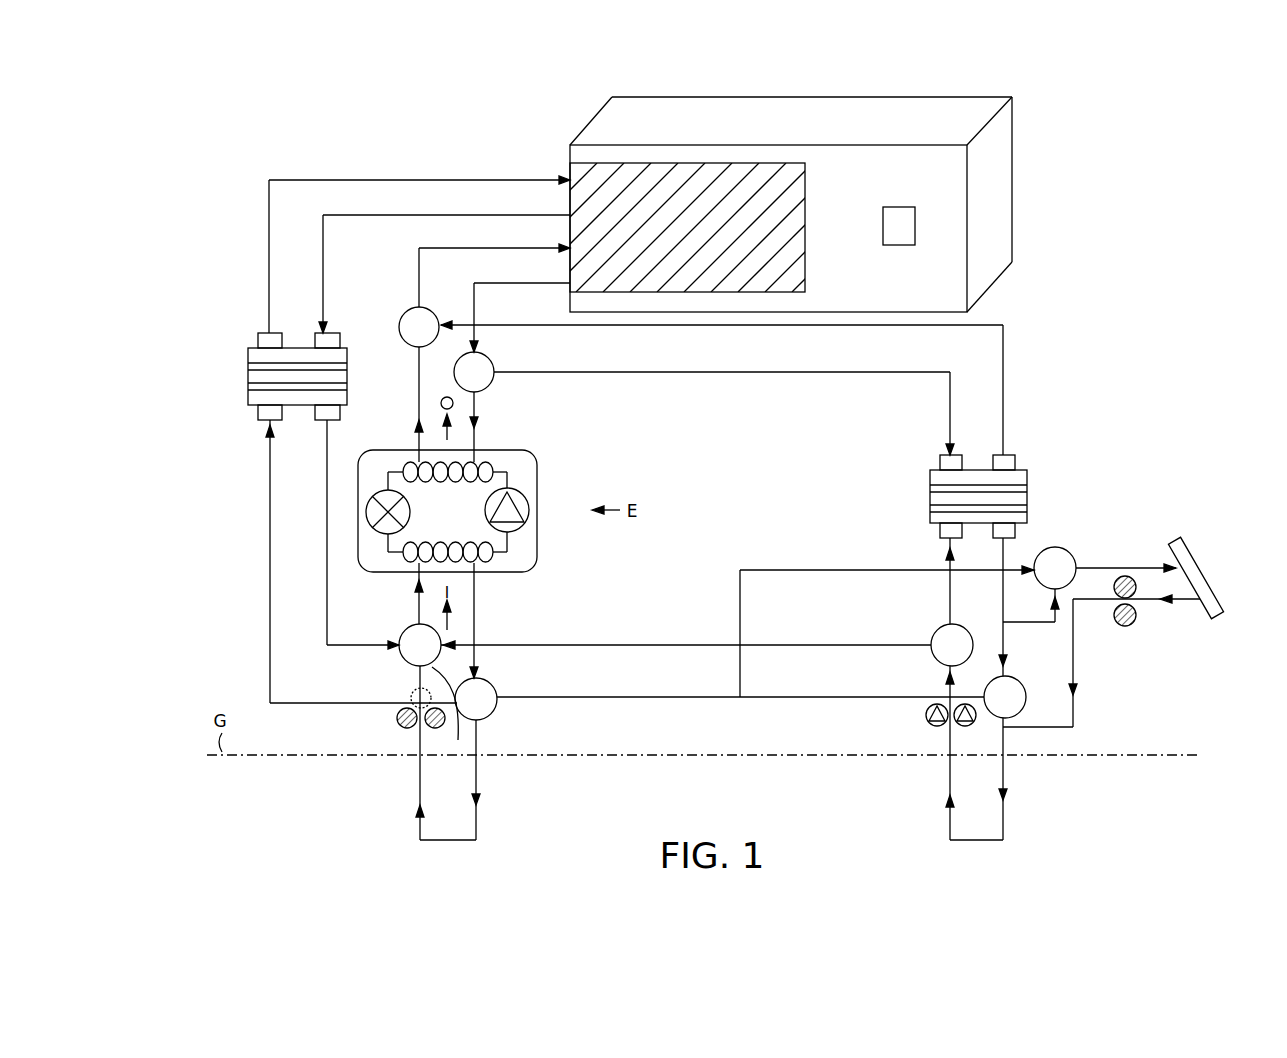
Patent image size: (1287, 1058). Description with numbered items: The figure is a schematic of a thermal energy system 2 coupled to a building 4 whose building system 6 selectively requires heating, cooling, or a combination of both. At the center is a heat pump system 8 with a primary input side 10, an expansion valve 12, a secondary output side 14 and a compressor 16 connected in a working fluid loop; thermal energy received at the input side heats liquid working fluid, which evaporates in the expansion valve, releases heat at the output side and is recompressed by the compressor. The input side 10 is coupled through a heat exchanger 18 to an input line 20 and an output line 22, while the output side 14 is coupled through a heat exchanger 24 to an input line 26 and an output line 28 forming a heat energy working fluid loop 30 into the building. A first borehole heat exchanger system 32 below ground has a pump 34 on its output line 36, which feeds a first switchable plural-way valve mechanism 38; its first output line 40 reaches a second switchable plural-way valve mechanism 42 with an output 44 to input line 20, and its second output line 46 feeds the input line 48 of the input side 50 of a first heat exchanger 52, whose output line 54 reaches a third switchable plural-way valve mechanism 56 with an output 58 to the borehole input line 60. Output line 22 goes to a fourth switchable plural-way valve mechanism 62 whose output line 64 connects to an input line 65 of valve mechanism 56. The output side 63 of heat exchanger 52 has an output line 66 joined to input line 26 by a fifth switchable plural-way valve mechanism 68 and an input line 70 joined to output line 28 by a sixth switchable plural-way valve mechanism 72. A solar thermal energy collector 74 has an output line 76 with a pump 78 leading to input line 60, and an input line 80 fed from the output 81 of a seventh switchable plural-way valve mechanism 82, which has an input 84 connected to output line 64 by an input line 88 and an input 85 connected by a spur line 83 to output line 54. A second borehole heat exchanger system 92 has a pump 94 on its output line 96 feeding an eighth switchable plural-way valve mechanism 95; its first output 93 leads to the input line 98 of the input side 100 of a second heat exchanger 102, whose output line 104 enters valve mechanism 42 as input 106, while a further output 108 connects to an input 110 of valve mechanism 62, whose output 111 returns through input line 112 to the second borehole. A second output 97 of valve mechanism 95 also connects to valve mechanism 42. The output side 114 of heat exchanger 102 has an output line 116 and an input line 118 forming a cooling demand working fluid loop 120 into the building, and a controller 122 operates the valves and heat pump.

The thermal energy system 2 is at (1086, 413).
The building 4 is at (1013, 198).
The building system 6 is at (806, 228).
The heat pump system 8 is at (538, 482).
The primary input side 10 is at (504, 572).
The expansion valve 12 is at (412, 512).
The secondary output side 14 is at (520, 452).
The compressor 16 is at (530, 510).
The heat exchanger 18 is at (402, 562).
The input line 20 is at (418, 603).
The output line 22 is at (476, 622).
The heat exchanger 24 is at (410, 458).
The input line 26 is at (478, 410).
The output line 28 is at (418, 394).
The heat energy working fluid loop 30 is at (418, 363).
The first borehole heat exchanger system 32 is at (1005, 785).
The pump 34 is at (925, 715).
The output line 36 is at (946, 688).
The first switchable plural-way valve mechanism 38 is at (932, 635).
The first output line 40 is at (823, 647).
The second switchable plural-way valve mechanism 42 is at (398, 640).
The output 44 is at (410, 622).
The second output line 46 is at (946, 590).
The input line 48 is at (946, 556).
The input side 50 is at (1028, 518).
The first heat exchanger 52 is at (1028, 497).
The output line 54 is at (998, 540).
The third switchable plural-way valve mechanism 56 is at (1022, 682).
The output 58 is at (1014, 712).
The input line 60 is at (1008, 738).
The fourth switchable plural-way valve mechanism 62 is at (496, 688).
The output side 63 is at (1028, 478).
The output line 64 is at (601, 699).
The input line 65 is at (975, 695).
The output line 66 is at (948, 409).
The fifth switchable plural-way valve mechanism 68 is at (490, 360).
The input line 70 is at (1005, 360).
The sixth switchable plural-way valve mechanism 72 is at (400, 325).
The solar thermal energy collector 74 is at (1212, 572).
The output line 76 is at (1193, 602).
The pump 78 is at (1132, 624).
The input line 80 is at (1144, 566).
The output 81 is at (1092, 566).
The seventh switchable plural-way valve mechanism 82 is at (1076, 578).
The spur line 83 is at (1008, 645).
The input 84 is at (1020, 550).
The input 85 is at (1050, 604).
The input line 88 is at (790, 568).
The second borehole heat exchanger system 92 is at (478, 778).
The first output 93 is at (298, 705).
The pump 94 is at (396, 722).
The eighth switchable plural-way valve mechanism 95 is at (398, 715).
The output line 96 is at (420, 738).
The second output 97 is at (418, 694).
The input line 98 is at (268, 477).
The input side 100 is at (247, 397).
The second heat exchanger 102 is at (247, 378).
The output line 104 is at (330, 425).
The input 106 is at (330, 648).
The further output 108 is at (447, 690).
The input 110 is at (456, 730).
The output 111 is at (480, 728).
The input line 112 is at (478, 745).
The output side 114 is at (247, 356).
The output line 116 is at (268, 250).
The input line 118 is at (325, 250).
The cooling demand working fluid loop 120 is at (410, 178).
The controller 122 is at (899, 246).